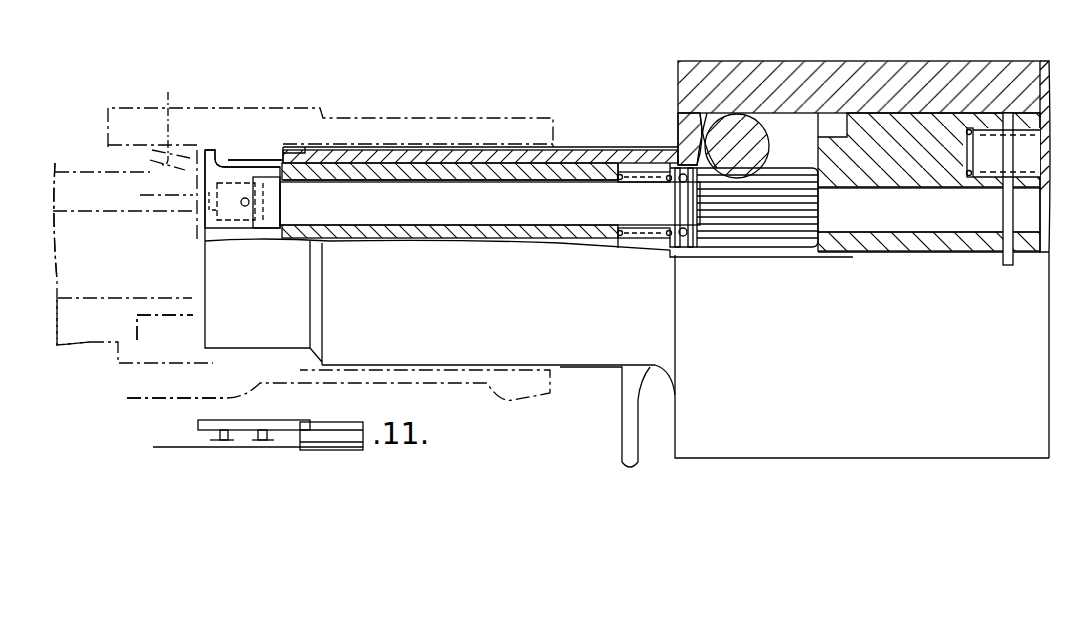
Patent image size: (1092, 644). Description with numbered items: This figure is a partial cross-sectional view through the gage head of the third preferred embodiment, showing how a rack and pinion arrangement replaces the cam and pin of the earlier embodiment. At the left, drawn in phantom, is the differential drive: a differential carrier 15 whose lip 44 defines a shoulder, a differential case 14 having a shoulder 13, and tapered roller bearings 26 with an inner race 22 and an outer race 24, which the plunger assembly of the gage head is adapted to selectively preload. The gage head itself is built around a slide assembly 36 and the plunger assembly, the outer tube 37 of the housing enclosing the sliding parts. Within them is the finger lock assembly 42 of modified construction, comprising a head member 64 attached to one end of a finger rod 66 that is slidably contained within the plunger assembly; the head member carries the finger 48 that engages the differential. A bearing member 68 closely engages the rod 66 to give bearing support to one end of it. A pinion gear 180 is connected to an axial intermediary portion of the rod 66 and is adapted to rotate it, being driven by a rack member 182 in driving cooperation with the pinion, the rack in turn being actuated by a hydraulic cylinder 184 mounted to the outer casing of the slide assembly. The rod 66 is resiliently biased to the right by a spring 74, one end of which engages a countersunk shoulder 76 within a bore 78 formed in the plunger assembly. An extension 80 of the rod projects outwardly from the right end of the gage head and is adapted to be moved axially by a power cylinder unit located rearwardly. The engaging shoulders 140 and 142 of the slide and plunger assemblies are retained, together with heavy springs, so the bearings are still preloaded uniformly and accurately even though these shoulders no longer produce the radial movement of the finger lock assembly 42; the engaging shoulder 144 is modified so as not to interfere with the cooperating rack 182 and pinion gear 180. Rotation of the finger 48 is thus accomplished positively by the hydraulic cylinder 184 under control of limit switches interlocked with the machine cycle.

The shoulder 13 is at (135, 200).
The differential case 14 is at (90, 330).
The differential carrier 15 is at (302, 102).
The inner race 22 is at (160, 320).
The outer race 24 is at (173, 360).
The tapered roller bearings 26 is at (173, 112).
The slide assembly 36 is at (522, 146).
The outer tube 37 is at (480, 157).
The finger lock assembly 42 is at (233, 156).
The lip 44 is at (248, 158).
The finger 48 is at (212, 150).
The head member 64 is at (245, 218).
The finger rod 66 is at (447, 213).
The bearing member 68 is at (340, 172).
The spring 74 is at (638, 168).
The countersunk shoulder 76 is at (630, 182).
The bore 78 is at (390, 187).
The extension 80 is at (955, 218).
The engaging shoulder 140 is at (968, 128).
The engaging shoulder 142 is at (718, 120).
The engaging shoulder 144 is at (810, 150).
The pinion gear 180 is at (783, 228).
The rack member 182 is at (752, 115).
The hydraulic cylinder 184 is at (643, 167).